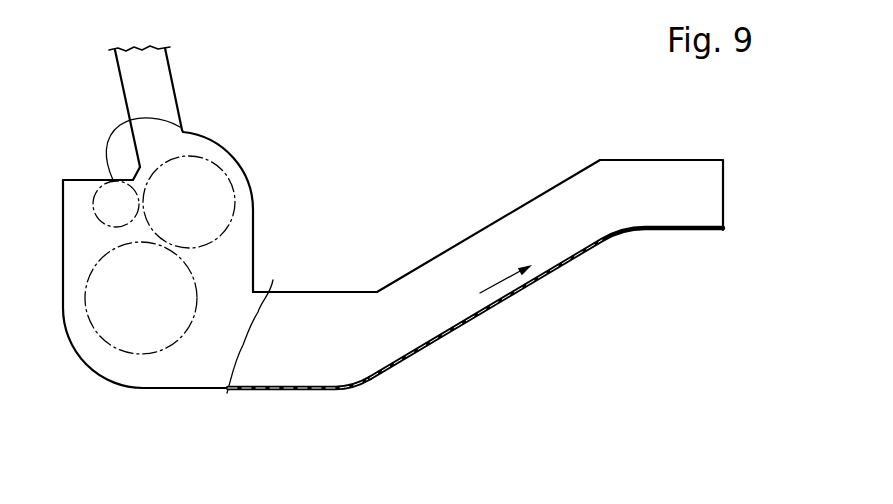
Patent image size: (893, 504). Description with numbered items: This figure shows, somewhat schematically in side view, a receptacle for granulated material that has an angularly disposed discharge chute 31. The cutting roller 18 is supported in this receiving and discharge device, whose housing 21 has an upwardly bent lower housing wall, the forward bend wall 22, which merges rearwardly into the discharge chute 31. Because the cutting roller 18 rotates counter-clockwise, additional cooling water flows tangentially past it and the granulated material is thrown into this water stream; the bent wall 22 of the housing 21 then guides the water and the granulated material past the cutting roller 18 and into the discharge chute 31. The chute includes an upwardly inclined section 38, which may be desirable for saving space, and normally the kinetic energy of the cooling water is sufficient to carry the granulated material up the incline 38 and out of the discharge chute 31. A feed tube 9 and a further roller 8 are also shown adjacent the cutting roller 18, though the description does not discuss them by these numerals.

The feed tube 9 is at (183, 128).
The roller 8 is at (213, 190).
The discharge chute 31 is at (533, 222).
The forward bend wall 22 is at (103, 380).
The cutting roller 18 is at (158, 335).
The housing 21 is at (297, 385).
The upwardly inclined section 38 is at (533, 280).